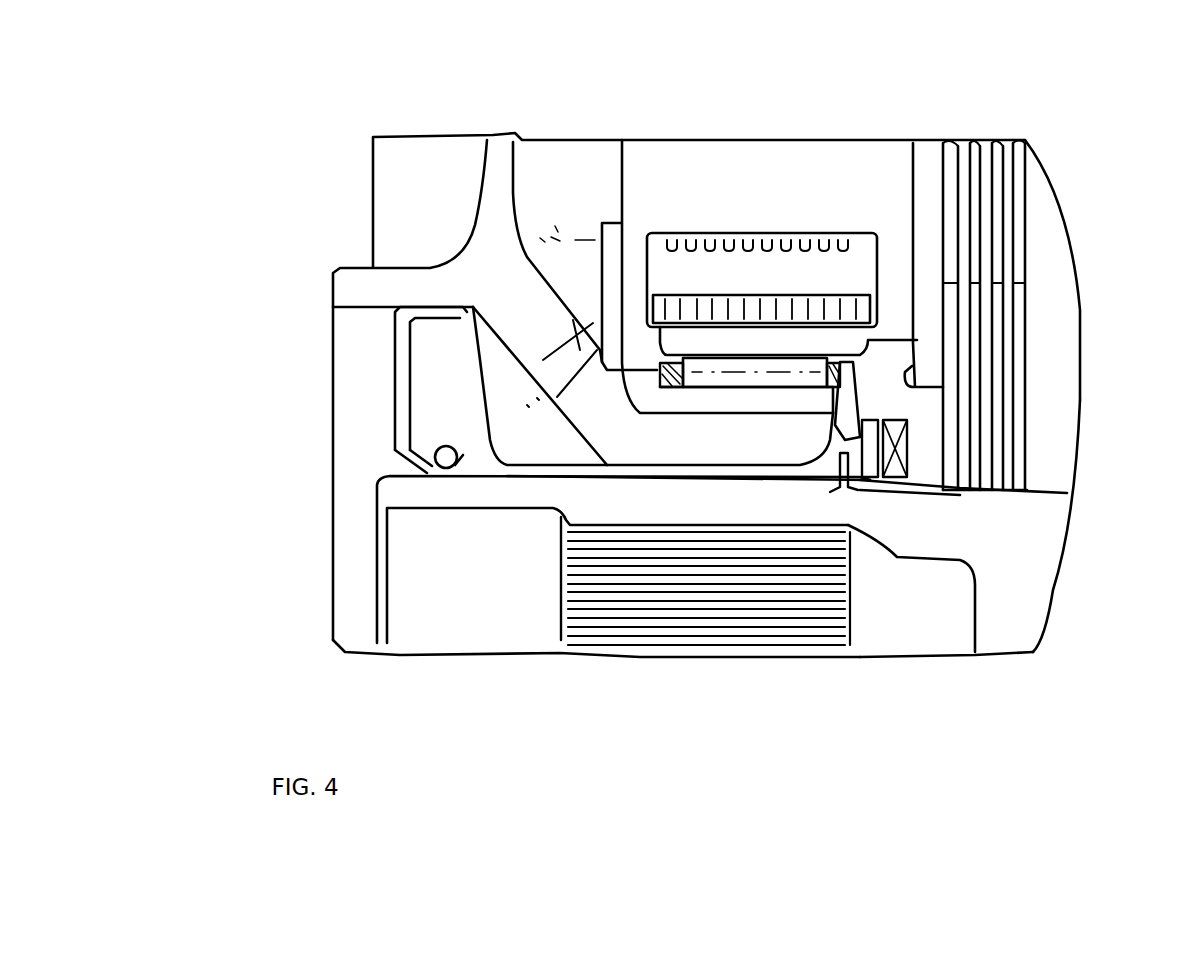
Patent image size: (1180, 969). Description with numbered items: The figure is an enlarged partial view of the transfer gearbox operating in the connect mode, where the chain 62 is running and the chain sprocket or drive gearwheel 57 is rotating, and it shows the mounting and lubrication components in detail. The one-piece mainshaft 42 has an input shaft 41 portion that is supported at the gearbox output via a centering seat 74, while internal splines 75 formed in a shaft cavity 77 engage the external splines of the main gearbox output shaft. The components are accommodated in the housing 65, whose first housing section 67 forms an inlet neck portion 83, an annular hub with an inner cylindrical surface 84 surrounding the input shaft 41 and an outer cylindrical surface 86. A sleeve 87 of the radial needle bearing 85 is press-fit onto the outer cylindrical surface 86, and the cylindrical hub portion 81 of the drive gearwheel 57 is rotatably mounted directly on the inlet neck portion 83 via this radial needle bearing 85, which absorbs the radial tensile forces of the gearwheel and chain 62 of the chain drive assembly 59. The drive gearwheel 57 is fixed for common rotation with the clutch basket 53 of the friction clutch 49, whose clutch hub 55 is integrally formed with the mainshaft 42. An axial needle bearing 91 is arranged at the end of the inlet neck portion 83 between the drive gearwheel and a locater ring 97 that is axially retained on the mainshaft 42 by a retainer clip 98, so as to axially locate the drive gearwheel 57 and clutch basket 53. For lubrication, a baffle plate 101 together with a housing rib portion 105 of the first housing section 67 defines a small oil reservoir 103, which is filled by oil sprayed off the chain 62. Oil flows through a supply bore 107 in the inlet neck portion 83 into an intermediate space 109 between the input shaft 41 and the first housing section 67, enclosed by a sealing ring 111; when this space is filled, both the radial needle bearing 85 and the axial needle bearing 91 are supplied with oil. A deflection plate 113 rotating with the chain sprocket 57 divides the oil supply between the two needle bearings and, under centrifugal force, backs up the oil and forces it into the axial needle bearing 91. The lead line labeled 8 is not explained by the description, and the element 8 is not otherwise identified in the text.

The heat sink 8 is at (923, 423).
The input shaft 41 is at (410, 492).
The mainshaft 42 is at (1010, 627).
The friction clutch 49 is at (1036, 225).
The clutch basket 53 is at (925, 156).
The clutch hub 55 is at (1013, 507).
The drive gearwheel 57 is at (805, 338).
The chain drive assembly 59 is at (685, 220).
The drive chain 62 is at (712, 340).
The housing 65 is at (475, 192).
The first housing section 67 is at (498, 208).
The centering seat 74 is at (470, 511).
The internal splines 75 is at (643, 630).
The shaft cavity 77 is at (907, 625).
The cylindrical hub portion 81 is at (713, 335).
The inlet neck portion 83 is at (613, 420).
The inner cylindrical surface 84 is at (720, 470).
The radial needle bearing 85 is at (737, 377).
The outer cylindrical surface 86 is at (668, 412).
The sleeve 87 is at (770, 395).
The axial needle bearing 91 is at (925, 478).
The locater ring 97 is at (868, 470).
The retainer clip 98 is at (838, 470).
The baffle plate 101 is at (612, 222).
The oil reservoir 103 is at (583, 283).
The housing rib portion 105 is at (515, 297).
The supply bore 107 is at (576, 352).
The intermediate space 109 is at (520, 415).
The sealing ring 111 is at (408, 395).
The deflection plate 113 is at (865, 345).